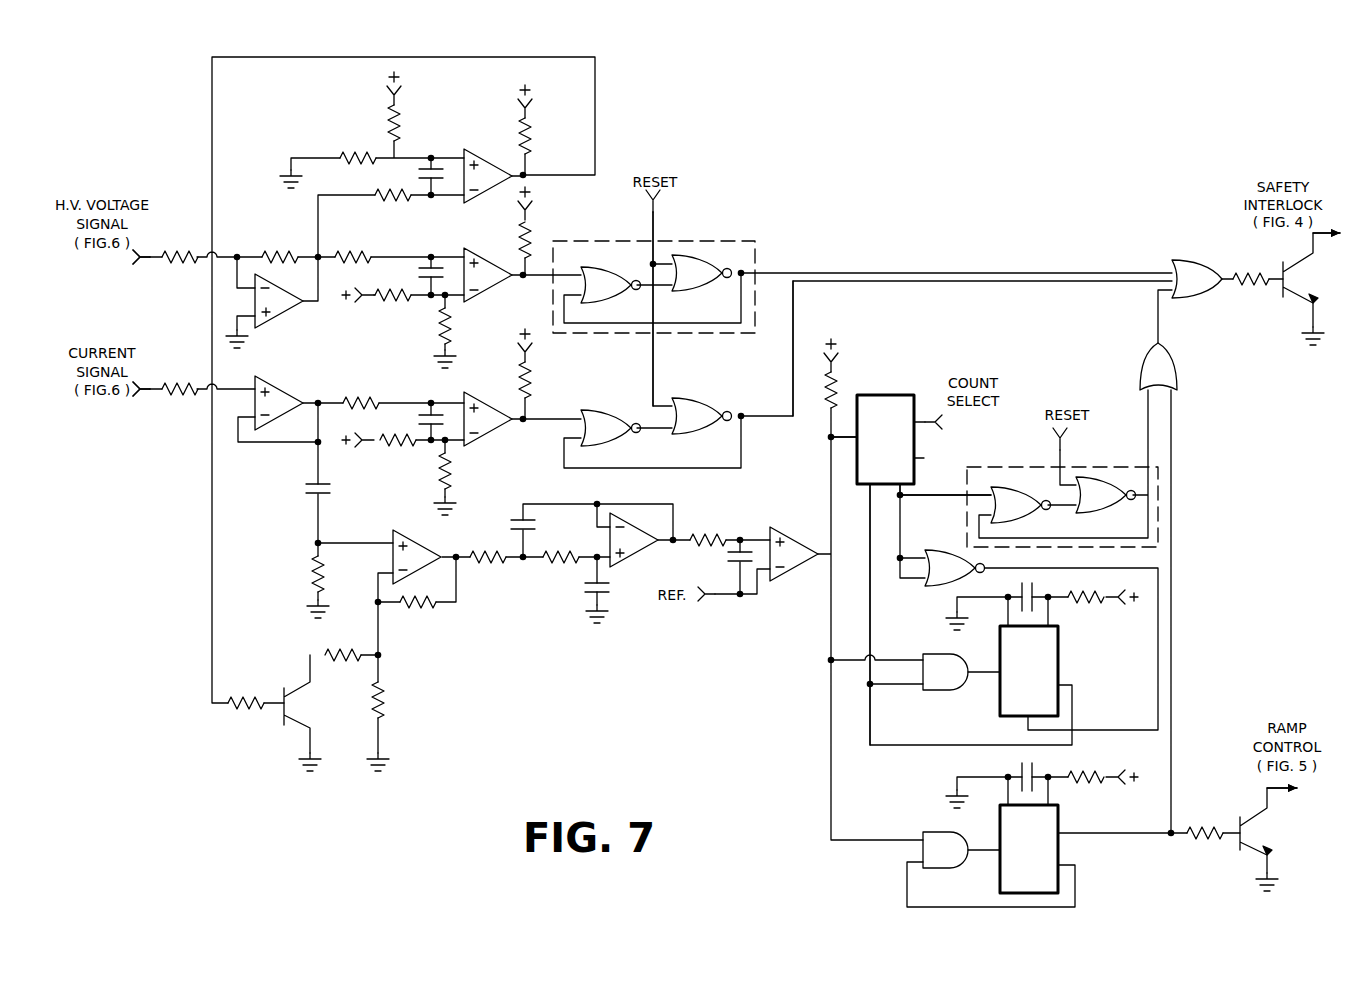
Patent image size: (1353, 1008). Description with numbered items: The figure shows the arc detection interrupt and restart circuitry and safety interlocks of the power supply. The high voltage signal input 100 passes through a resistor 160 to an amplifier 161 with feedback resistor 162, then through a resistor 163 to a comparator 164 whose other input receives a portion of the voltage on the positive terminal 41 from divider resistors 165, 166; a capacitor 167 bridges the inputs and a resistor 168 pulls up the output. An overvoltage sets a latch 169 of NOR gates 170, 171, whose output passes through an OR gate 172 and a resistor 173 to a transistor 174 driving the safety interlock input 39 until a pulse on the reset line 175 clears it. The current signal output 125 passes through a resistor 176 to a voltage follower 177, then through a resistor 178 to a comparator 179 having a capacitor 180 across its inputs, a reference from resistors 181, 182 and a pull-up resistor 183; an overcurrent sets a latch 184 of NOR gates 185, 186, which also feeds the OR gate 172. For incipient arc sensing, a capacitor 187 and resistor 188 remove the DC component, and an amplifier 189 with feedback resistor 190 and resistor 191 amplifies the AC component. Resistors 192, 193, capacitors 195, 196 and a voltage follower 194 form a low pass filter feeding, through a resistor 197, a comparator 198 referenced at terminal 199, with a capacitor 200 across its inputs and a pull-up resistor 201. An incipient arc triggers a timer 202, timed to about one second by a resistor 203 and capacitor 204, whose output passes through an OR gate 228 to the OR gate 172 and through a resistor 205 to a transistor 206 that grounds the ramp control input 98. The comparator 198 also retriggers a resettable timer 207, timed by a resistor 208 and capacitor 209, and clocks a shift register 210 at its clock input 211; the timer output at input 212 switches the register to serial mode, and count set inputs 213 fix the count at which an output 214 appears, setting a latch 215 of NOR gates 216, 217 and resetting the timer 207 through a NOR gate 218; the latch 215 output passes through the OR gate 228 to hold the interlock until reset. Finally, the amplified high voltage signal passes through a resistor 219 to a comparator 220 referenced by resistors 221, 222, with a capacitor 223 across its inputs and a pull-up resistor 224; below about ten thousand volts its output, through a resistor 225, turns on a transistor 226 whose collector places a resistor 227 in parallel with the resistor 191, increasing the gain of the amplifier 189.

The safety interlock input 39 is at (1320, 238).
The positive terminal 41 is at (388, 93).
The ramp control input 98 is at (1278, 795).
The high voltage signal input 100 is at (140, 265).
The current signal output 125 is at (140, 397).
The resistor 160 is at (182, 265).
The amplifier 161 is at (278, 318).
The feedback resistor 162 is at (272, 253).
The resistor 163 is at (346, 252).
The comparator 164 is at (486, 292).
The resistor 165 is at (392, 302).
The resistor 166 is at (452, 327).
The capacitor 167 is at (436, 265).
The resistor 168 is at (530, 240).
The latch 169 is at (758, 252).
The NOR gate 170 is at (608, 268).
The NOR gate 171 is at (705, 255).
The OR gate 172 is at (1182, 262).
The resistor 173 is at (1240, 272).
The transistor 174 is at (1278, 300).
The reset line 175 is at (660, 218).
The resistor 176 is at (182, 397).
The voltage follower 177 is at (282, 390).
The resistor 178 is at (362, 398).
The comparator 179 is at (490, 436).
The capacitor 180 is at (425, 432).
The resistor 181 is at (386, 450).
The resistor 182 is at (455, 478).
The resistor 183 is at (522, 382).
The latch 184 is at (768, 450).
The NOR gate 185 is at (612, 443).
The NOR gate 186 is at (702, 400).
The capacitor 187 is at (308, 495).
The resistor 188 is at (310, 572).
The amplifier 189 is at (424, 545).
The feedback resistor 190 is at (416, 610).
The resistor 191 is at (386, 708).
The resistor 192 is at (488, 565).
The resistor 193 is at (560, 565).
The voltage follower 194 is at (635, 553).
The capacitor 195 is at (608, 600).
The capacitor 196 is at (512, 528).
The resistor 197 is at (708, 534).
The comparator 198 is at (752, 575).
The terminal 199 is at (700, 602).
The capacitor 200 is at (760, 536).
The resistor 201 is at (838, 374).
The timer 202 is at (998, 870).
The resistor 203 is at (1088, 772).
The capacitor 204 is at (1018, 772).
The resistor 205 is at (1195, 845).
The transistor 206 is at (1238, 818).
The resettable timer 207 is at (998, 700).
The resistor 208 is at (1095, 605).
The capacitor 209 is at (1036, 608).
The shift register 210 is at (918, 458).
The clock input 211 is at (834, 450).
The input 212 is at (870, 492).
The count set inputs 213 is at (925, 420).
The output 214 is at (912, 490).
The latch 215 is at (1162, 545).
The NOR gate 216 is at (1022, 490).
The NOR gate 217 is at (1085, 512).
The NOR gate 218 is at (947, 552).
The resistor 219 is at (378, 193).
The comparator 220 is at (482, 193).
The resistor 221 is at (400, 128).
The resistor 222 is at (345, 157).
The capacitor 223 is at (440, 170).
The resistor 224 is at (528, 132).
The resistor 225 is at (236, 715).
The transistor 226 is at (282, 690).
The resistor 227 is at (342, 663).
The OR gate 228 is at (1180, 372).